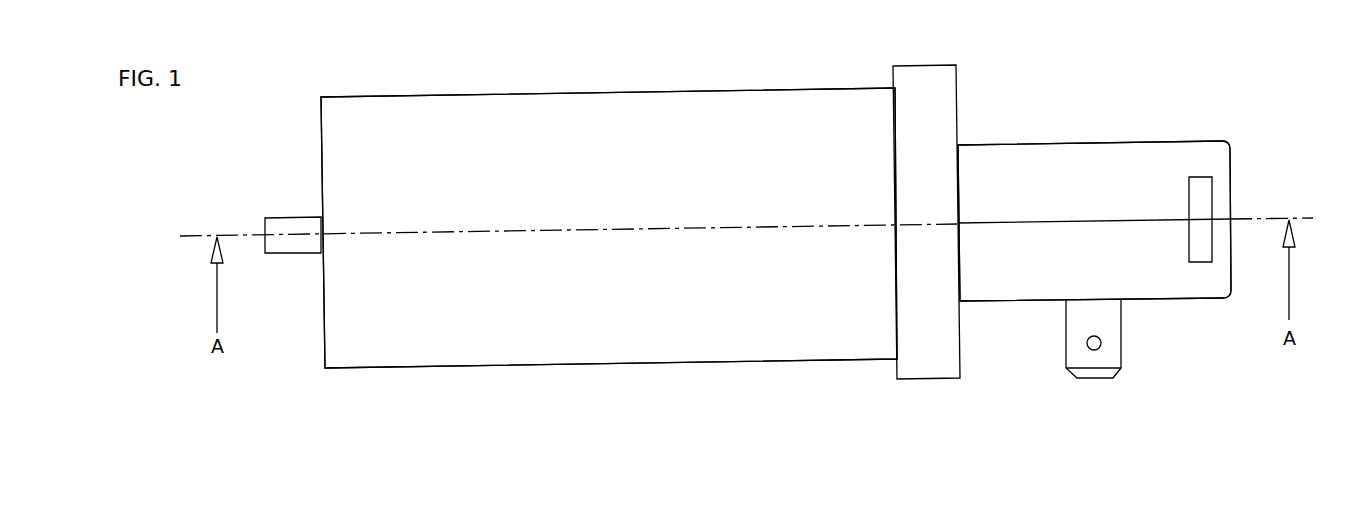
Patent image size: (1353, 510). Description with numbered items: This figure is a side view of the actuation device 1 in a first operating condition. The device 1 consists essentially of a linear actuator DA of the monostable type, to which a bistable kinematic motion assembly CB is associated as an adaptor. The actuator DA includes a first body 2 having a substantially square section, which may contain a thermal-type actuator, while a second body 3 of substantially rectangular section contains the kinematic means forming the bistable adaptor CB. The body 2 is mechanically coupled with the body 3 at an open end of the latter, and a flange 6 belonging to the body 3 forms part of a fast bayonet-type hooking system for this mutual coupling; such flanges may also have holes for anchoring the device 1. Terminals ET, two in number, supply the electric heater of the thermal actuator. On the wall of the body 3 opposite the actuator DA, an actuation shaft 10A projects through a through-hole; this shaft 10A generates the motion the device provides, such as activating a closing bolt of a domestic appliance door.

The actuation device 1 is at (418, 426).
The first body 2 is at (1052, 170).
The second body 3 is at (355, 108).
The flange 6 is at (928, 88).
The actuation shaft 10A is at (293, 225).
The bistable kinematic motion assembly CB is at (660, 90).
The linear actuator DA is at (1177, 140).
The terminals ET is at (1080, 355).